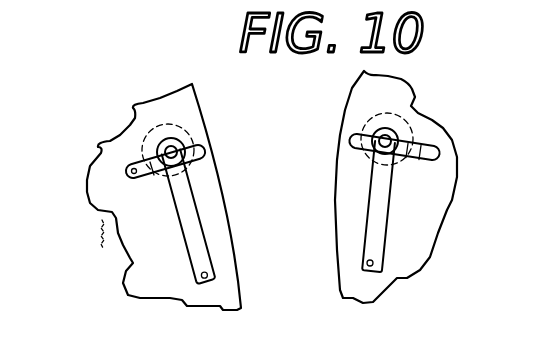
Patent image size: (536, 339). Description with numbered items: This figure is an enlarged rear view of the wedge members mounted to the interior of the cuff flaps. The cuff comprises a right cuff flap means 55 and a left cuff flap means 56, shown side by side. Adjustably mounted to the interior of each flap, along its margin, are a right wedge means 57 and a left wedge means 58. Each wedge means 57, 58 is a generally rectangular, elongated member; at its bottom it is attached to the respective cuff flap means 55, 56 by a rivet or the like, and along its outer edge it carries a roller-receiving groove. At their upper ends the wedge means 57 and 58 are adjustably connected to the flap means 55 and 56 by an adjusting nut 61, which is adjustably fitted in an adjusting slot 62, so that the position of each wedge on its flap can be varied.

The right cuff flap means 55 is at (417, 262).
The left cuff flap means 56 is at (133, 263).
The right wedge means 57 is at (378, 223).
The left wedge means 58 is at (195, 238).
The adjusting nut 61 is at (146, 142).
The adjusting slot 62 is at (132, 178).